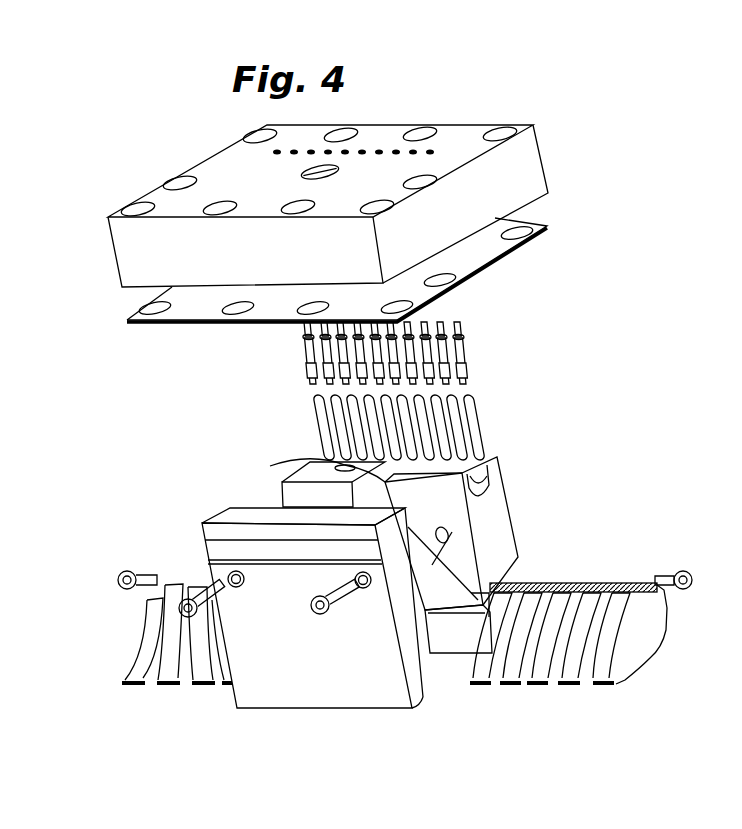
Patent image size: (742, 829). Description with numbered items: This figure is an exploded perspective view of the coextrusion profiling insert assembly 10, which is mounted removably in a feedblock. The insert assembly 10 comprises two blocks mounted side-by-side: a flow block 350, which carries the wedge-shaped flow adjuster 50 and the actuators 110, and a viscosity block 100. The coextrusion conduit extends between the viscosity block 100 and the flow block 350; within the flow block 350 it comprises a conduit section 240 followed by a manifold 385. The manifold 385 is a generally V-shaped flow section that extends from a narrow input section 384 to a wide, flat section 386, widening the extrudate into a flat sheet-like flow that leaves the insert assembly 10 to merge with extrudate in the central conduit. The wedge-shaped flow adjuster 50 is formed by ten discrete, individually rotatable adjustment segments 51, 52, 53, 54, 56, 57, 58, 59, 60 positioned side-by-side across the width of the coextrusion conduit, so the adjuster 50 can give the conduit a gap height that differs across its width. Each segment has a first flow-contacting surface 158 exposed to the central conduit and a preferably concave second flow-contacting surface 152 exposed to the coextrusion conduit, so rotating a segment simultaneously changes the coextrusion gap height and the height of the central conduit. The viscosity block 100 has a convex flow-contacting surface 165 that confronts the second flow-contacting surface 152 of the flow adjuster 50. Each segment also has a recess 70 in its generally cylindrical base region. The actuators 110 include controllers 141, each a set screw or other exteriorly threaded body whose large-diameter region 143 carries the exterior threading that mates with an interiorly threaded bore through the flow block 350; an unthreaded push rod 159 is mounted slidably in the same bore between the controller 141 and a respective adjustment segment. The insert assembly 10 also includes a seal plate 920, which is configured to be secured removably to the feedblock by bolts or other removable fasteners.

The coextrusion profiling insert assembly 10 is at (136, 156).
The seal plate 920 is at (528, 168).
The actuators 110 is at (474, 450).
The controller 141 is at (309, 356).
The large-diameter region 143 is at (367, 338).
The push rod 159 is at (358, 406).
The narrow input section 384 is at (305, 461).
The flow block 350 is at (503, 528).
The conduit section 240 is at (490, 486).
The manifold 385 is at (432, 563).
The wide, flat section 386 is at (430, 600).
The viscosity block 100 is at (308, 697).
The convex flow-contacting surface 165 is at (422, 703).
The second flow-contacting surface 152 is at (217, 645).
The adjustment segment 51 is at (132, 684).
The adjustment segment 52 is at (168, 686).
The adjustment segment 53 is at (202, 686).
The adjustment segment 54 is at (227, 686).
The adjustment segment 56 is at (497, 684).
The adjustment segment 57 is at (522, 688).
The adjustment segment 58 is at (543, 686).
The adjustment segment 59 is at (570, 688).
The adjustment segment 60 is at (607, 688).
The first flow-contacting surface 158 is at (507, 688).
The wedge-shaped flow adjuster 50 is at (667, 659).
The recess 70 is at (678, 596).